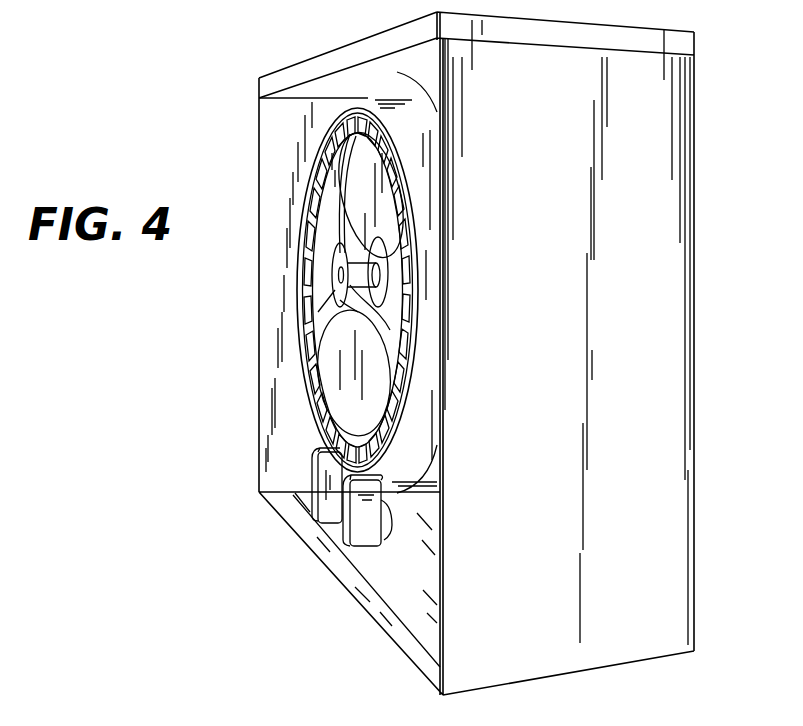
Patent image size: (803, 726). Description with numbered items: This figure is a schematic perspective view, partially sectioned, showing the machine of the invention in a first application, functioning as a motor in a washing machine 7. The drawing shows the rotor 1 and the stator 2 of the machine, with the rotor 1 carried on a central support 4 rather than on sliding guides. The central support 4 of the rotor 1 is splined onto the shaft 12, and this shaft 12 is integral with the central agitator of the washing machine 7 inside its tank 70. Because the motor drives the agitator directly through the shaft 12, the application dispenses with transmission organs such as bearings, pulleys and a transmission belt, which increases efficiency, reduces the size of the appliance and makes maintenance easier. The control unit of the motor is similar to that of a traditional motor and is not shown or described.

The rotor 1 is at (304, 178).
The stator 2 is at (318, 521).
The central support 4 is at (333, 352).
The washing machine 7 is at (368, 605).
The shaft 12 is at (352, 256).
The tank 70 is at (372, 97).